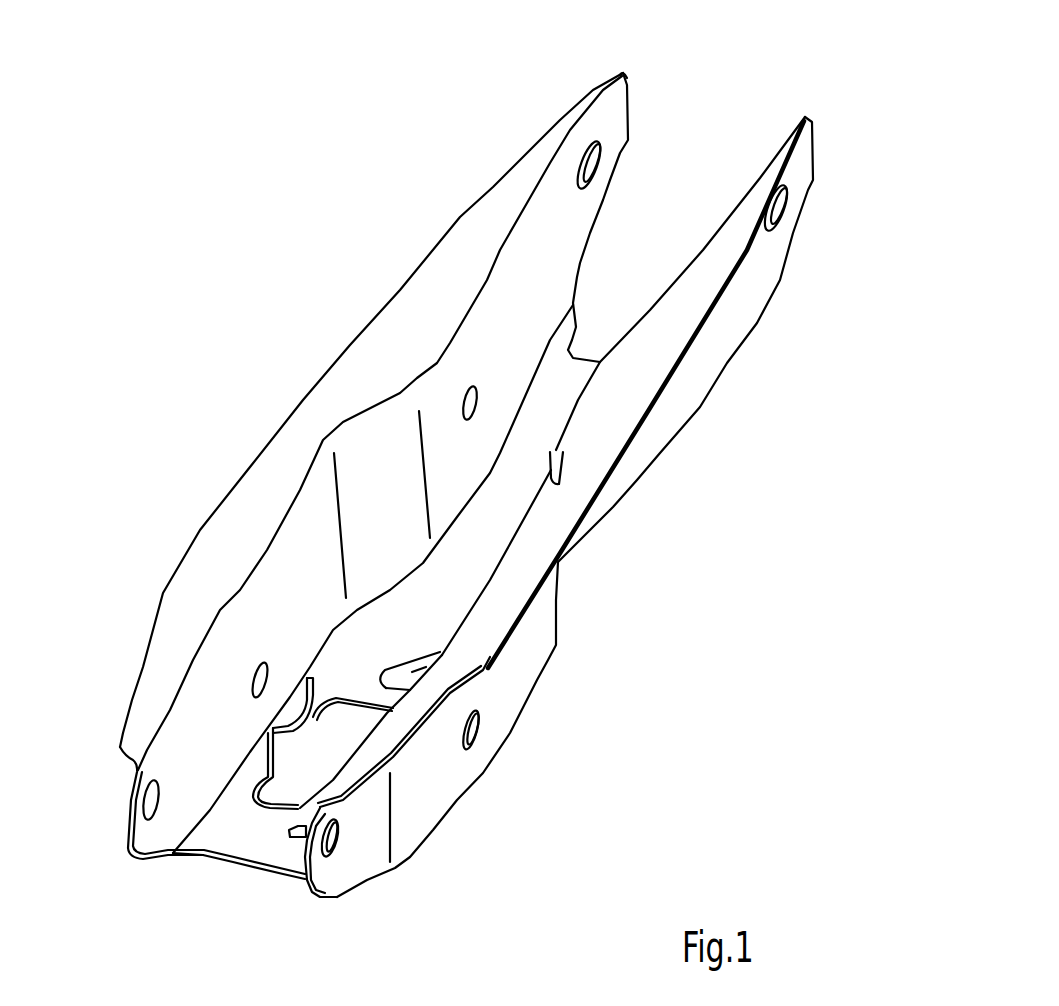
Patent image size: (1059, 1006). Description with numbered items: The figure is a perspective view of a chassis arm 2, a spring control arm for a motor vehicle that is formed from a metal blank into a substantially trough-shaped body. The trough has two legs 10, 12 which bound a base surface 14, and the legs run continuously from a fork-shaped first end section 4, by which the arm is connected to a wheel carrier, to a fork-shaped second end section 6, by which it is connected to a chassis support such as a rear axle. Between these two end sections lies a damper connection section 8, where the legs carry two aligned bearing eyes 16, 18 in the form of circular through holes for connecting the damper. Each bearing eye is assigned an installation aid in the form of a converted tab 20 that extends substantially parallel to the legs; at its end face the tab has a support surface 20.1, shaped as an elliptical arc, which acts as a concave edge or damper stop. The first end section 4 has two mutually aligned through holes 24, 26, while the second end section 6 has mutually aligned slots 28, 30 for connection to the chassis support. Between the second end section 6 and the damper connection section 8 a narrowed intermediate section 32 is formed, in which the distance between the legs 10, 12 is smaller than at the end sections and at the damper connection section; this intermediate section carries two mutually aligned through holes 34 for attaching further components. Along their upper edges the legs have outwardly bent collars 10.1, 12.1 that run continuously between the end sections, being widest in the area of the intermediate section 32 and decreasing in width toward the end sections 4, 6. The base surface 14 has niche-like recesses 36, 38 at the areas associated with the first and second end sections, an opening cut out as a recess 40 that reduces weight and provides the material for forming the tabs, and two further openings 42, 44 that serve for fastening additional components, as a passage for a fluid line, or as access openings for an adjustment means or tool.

The chassis arm 2 is at (373, 521).
The first end section 4 is at (174, 760).
The second end section 6 is at (570, 40).
The damper connection section 8 is at (262, 537).
The leg 10 is at (374, 410).
The collar 10.1 is at (380, 423).
The leg 12 is at (575, 507).
The collar 12.1 is at (690, 417).
The base surface 14 is at (570, 562).
The bearing eye 16 is at (186, 617).
The bearing eye 18 is at (525, 748).
The tab 20 is at (223, 650).
The support surface 20.1 is at (227, 650).
The through hole 24 is at (100, 800).
The through hole 26 is at (367, 887).
The slot 28 is at (535, 134).
The slot 30 is at (822, 223).
The intermediate section 32 is at (355, 407).
The through hole 34 is at (358, 376).
The recess 36 is at (194, 921).
The recess 38 is at (654, 365).
The recess 40 is at (413, 768).
The opening 42 is at (286, 896).
The opening 44 is at (504, 689).